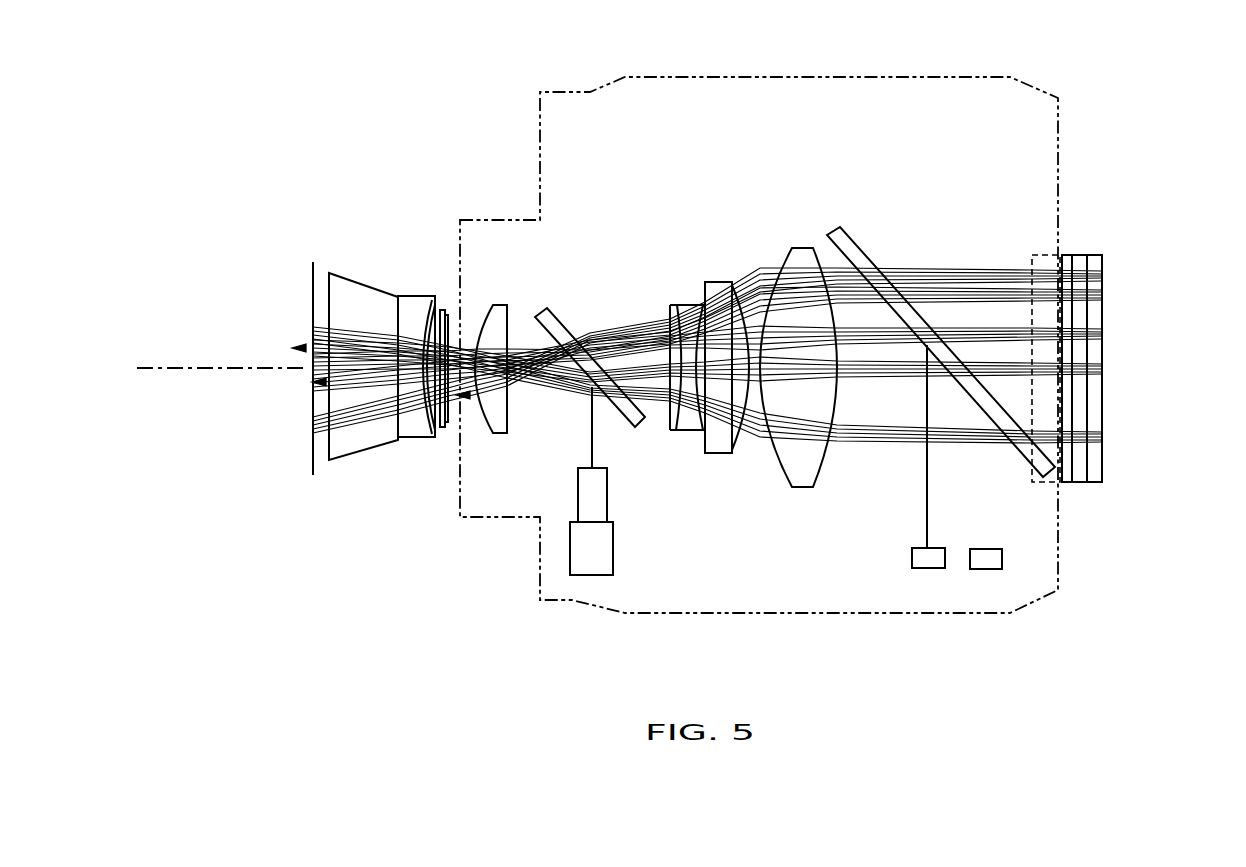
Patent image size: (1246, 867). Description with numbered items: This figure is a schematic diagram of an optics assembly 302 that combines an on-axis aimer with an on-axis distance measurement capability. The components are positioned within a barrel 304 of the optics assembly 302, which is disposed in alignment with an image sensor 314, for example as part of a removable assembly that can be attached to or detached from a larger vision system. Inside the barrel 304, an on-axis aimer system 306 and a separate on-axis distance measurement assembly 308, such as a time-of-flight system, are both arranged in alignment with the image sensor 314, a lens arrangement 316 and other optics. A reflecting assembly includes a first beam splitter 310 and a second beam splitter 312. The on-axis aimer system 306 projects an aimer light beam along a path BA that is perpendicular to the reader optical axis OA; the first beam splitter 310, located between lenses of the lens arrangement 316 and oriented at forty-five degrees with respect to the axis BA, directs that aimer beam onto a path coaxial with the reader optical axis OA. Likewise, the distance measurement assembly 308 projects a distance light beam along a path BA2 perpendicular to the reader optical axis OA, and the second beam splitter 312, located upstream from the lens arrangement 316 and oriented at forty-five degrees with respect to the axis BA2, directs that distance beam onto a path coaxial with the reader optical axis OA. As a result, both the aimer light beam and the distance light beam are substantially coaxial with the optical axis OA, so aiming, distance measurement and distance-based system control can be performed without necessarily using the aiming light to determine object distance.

The optics assembly 302 is at (1018, 38).
The barrel 304 is at (815, 77).
The on-axis aimer system 306 is at (570, 548).
The on-axis distance measurement assembly 308 is at (912, 558).
The first beam splitter 310 is at (625, 430).
The second beam splitter 312 is at (1012, 443).
The image sensor 314 is at (1103, 313).
The lens arrangement 316 is at (793, 250).
The beam path/axis of the aimer light beam BA is at (590, 428).
The beam path/axis of the distance light beam BA2 is at (927, 498).
The reader optical axis OA is at (220, 368).